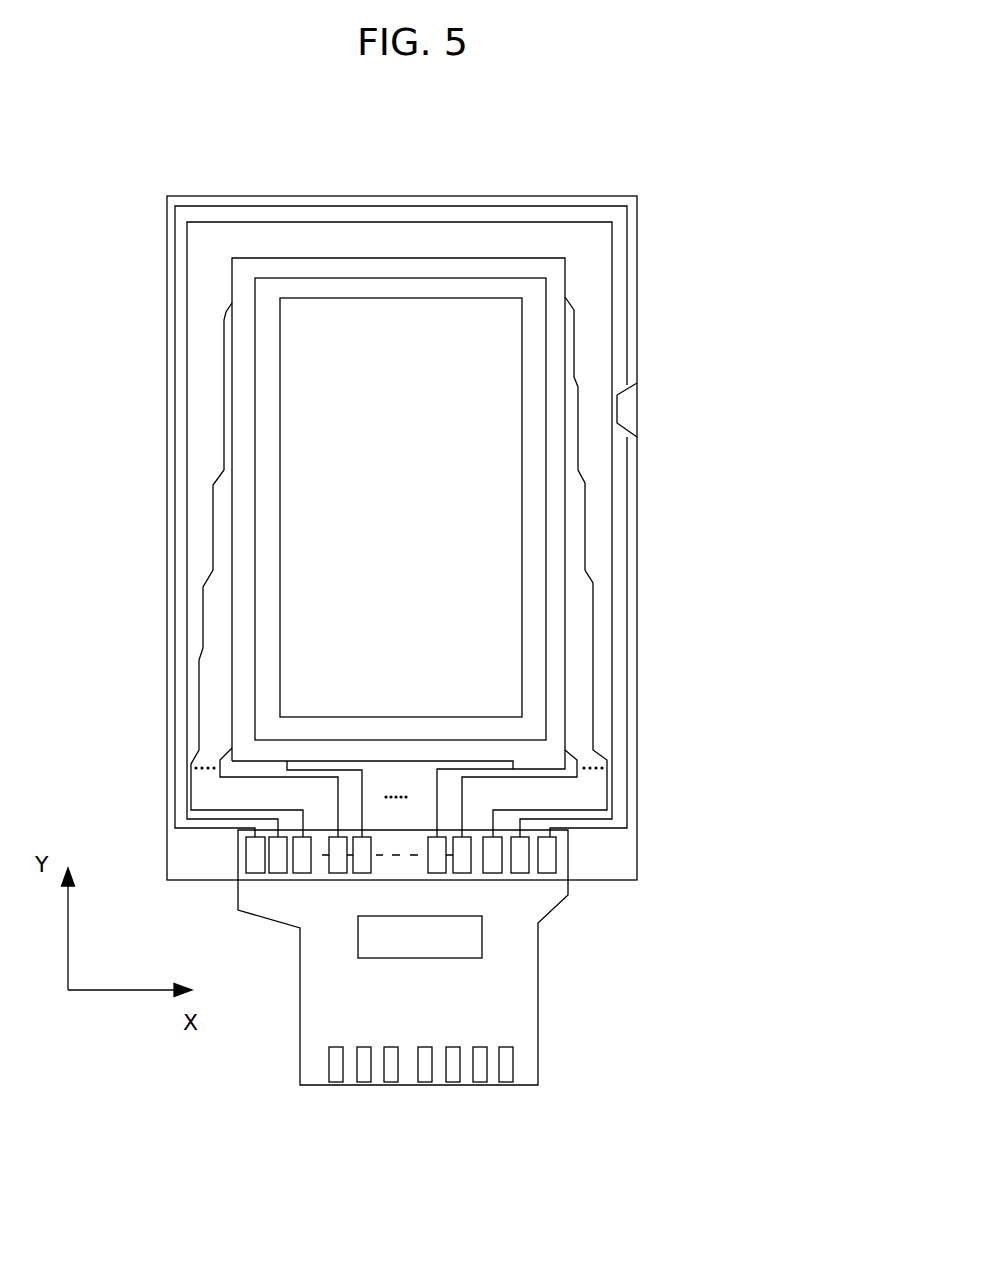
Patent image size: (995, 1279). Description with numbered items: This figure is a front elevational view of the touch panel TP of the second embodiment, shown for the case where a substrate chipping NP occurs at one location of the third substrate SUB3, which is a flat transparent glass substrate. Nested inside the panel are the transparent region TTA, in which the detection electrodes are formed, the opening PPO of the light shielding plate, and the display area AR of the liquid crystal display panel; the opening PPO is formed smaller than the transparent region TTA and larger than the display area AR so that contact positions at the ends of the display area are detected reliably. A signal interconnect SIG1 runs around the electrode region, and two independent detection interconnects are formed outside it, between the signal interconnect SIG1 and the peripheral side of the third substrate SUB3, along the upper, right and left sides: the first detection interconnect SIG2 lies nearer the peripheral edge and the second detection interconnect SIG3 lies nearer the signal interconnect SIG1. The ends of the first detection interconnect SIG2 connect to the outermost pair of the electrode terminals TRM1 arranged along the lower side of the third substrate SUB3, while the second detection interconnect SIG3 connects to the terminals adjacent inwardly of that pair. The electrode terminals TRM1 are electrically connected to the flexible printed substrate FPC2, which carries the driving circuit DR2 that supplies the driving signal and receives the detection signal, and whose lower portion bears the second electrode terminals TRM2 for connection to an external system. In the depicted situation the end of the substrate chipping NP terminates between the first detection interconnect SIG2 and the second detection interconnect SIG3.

The touch panel TP is at (402, 189).
The transparent region TTA is at (482, 246).
The display area AR is at (484, 286).
The opening PPO is at (561, 296).
The substrate chipping NP is at (643, 399).
The signal interconnect SIG1 is at (613, 623).
The first detection interconnect SIG2 is at (643, 474).
The second detection interconnect SIG3 is at (631, 530).
The third substrate SUB3 is at (656, 707).
The electrode terminals TRM1 is at (576, 854).
The driving circuit DR2 is at (505, 935).
The flexible printed substrate FPC2 is at (556, 1003).
The second electrode terminals TRM2 is at (530, 1069).